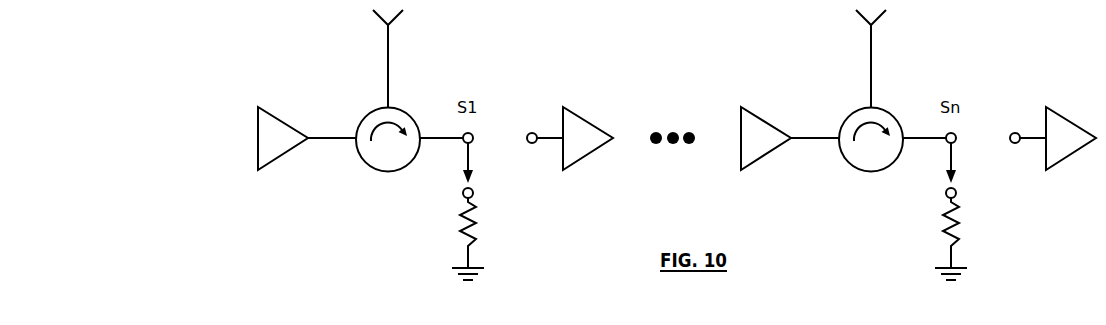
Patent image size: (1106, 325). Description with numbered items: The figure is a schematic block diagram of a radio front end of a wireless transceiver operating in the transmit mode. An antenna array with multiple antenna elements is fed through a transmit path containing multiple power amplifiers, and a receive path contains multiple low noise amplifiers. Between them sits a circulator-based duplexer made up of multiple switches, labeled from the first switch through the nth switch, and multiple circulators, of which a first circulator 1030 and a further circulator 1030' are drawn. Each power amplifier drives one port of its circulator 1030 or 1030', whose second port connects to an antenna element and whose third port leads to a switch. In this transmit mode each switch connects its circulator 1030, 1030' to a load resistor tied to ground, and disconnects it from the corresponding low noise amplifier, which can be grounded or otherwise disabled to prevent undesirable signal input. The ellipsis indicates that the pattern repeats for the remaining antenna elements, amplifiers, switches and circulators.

The circulator 1030 is at (388, 140).
The circulator 1030' is at (871, 140).